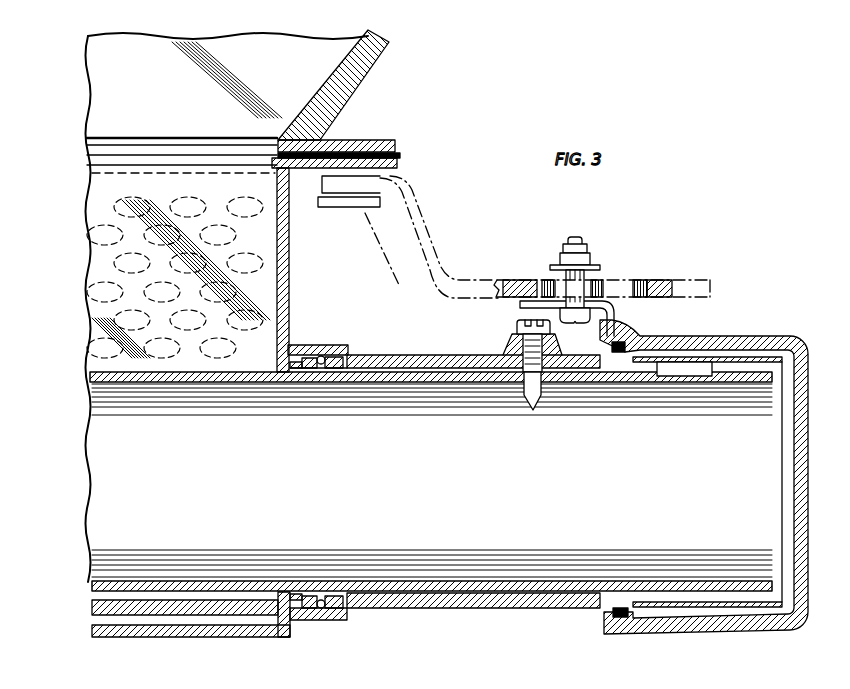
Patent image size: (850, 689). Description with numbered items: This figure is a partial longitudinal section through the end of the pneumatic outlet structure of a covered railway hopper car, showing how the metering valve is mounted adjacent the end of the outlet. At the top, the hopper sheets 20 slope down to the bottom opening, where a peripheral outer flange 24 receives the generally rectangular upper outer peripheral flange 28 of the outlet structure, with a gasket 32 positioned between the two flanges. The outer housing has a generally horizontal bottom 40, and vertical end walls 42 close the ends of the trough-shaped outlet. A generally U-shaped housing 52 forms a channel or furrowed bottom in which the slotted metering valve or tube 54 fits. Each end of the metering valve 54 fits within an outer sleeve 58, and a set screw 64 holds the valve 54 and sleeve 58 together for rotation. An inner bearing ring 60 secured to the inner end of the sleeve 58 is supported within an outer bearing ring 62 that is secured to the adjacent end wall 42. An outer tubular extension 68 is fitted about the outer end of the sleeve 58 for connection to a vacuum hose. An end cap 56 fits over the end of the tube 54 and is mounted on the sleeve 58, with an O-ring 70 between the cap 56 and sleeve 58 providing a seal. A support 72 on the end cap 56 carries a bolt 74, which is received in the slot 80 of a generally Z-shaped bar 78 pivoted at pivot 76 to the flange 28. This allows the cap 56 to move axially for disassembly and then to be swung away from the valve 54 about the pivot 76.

The hopper sheets 20 is at (90, 73).
The peripheral outer flange 24 is at (356, 142).
The upper outer peripheral flange 28 is at (400, 164).
The gasket 32 is at (399, 156).
The bottom 40 is at (178, 630).
The end walls 42 is at (290, 277).
The U-shaped housing 52 is at (95, 606).
The metering valve 54 is at (430, 588).
The end cap 56 is at (757, 336).
The outer sleeve 58 is at (402, 355).
The inner bearing ring 60 is at (317, 368).
The outer bearing ring 62 is at (310, 345).
The set screw 64 is at (529, 406).
The outer tubular extension 68 is at (712, 364).
The O-ring 70 is at (604, 362).
The support 72 is at (519, 305).
The bolt 74 is at (598, 280).
The pivot 76 is at (331, 208).
The Z-shaped bar 78 is at (527, 282).
The slot 80 is at (636, 296).